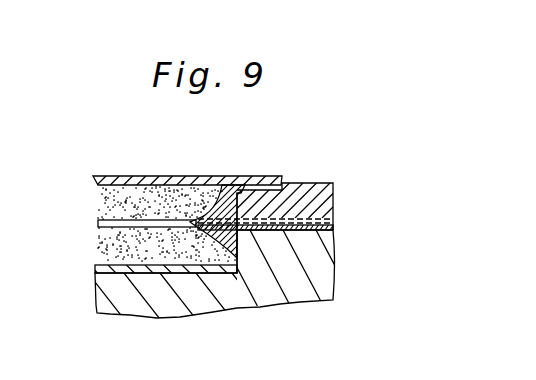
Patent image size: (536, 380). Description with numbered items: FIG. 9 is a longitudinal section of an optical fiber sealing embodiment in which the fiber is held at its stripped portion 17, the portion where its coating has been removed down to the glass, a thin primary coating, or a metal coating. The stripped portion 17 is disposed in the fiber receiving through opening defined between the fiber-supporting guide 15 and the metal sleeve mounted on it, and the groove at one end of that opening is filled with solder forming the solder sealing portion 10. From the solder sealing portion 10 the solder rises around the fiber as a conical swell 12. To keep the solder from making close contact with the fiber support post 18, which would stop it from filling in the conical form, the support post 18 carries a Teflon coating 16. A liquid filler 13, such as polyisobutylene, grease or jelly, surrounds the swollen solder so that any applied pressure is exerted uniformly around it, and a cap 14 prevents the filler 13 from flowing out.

The solder sealing portion 10 is at (300, 207).
The conical swell 12 is at (206, 200).
The liquid filler 13 is at (108, 206).
The cap 14 is at (157, 176).
The fiber-supporting guide 15 is at (322, 262).
The Teflon coating 16 is at (95, 268).
The stripped portion of optical fiber 17 is at (104, 226).
The fiber support post 18 is at (128, 304).